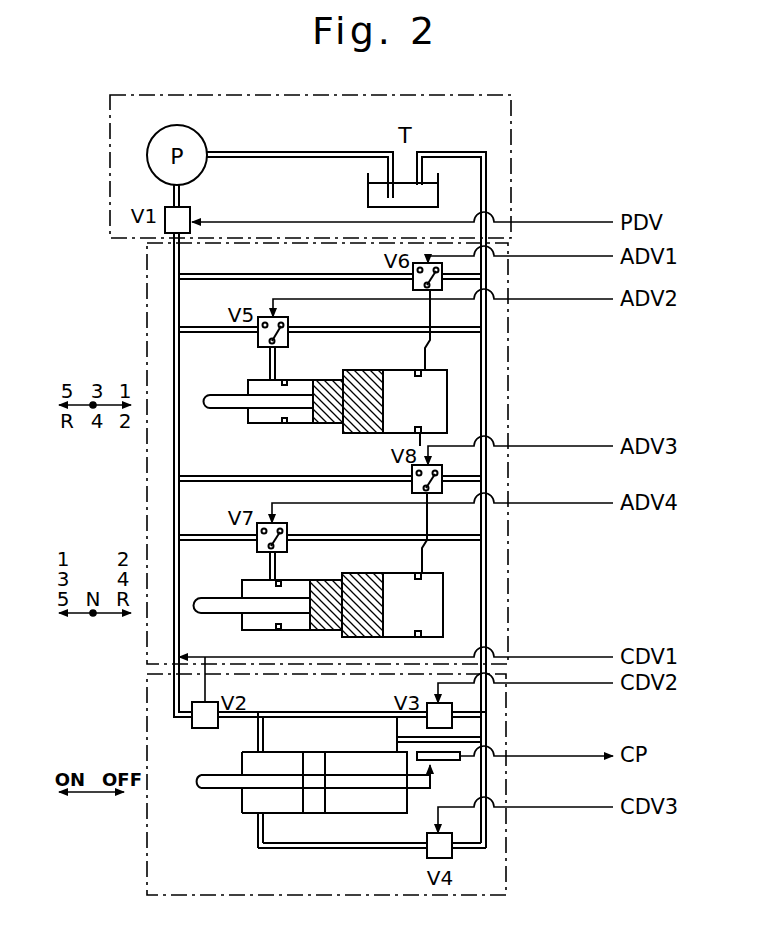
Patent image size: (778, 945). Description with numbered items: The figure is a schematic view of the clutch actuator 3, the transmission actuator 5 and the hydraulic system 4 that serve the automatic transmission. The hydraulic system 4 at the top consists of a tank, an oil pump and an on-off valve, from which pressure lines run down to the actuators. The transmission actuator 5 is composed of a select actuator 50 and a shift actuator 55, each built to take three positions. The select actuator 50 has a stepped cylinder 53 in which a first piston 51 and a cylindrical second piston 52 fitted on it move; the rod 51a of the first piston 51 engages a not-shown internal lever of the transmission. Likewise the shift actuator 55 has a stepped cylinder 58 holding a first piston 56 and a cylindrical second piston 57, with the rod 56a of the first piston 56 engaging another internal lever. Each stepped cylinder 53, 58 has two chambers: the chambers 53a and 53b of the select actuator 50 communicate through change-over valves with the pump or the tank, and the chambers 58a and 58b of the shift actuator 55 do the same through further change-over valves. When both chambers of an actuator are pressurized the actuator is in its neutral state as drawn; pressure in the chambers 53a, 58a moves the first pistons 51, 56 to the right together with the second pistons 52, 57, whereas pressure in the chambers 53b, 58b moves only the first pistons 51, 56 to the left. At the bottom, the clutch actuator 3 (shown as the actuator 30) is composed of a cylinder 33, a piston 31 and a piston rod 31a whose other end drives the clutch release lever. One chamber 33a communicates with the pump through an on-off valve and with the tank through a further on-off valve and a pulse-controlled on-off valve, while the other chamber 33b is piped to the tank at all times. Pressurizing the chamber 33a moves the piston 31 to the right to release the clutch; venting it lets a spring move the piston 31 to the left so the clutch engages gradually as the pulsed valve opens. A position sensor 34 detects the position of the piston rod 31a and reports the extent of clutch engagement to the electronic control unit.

The clutch actuator 3 is at (147, 877).
The hydraulic system 4 is at (503, 138).
The transmission actuator 5 is at (150, 277).
The clutch cylinder 30 is at (333, 805).
The piston 31 is at (310, 807).
The piston rod 31a is at (215, 777).
The cylinder 33 is at (340, 748).
The chamber 33a is at (250, 815).
The chamber 33b is at (392, 807).
The position sensor 34 is at (445, 762).
The select actuator 50 is at (338, 406).
The first piston 51 is at (327, 425).
The rod 51a is at (217, 393).
The second piston 52 is at (367, 435).
The stepped cylinder 53 is at (310, 380).
The chamber 53a is at (252, 423).
The chamber 53b is at (445, 392).
The shift actuator 55 is at (331, 600).
The first piston 56 is at (325, 625).
The rod 56a is at (210, 600).
The second piston 57 is at (367, 574).
The stepped cylinder 58 is at (307, 580).
The chamber 58a is at (242, 623).
The chamber 58b is at (443, 590).